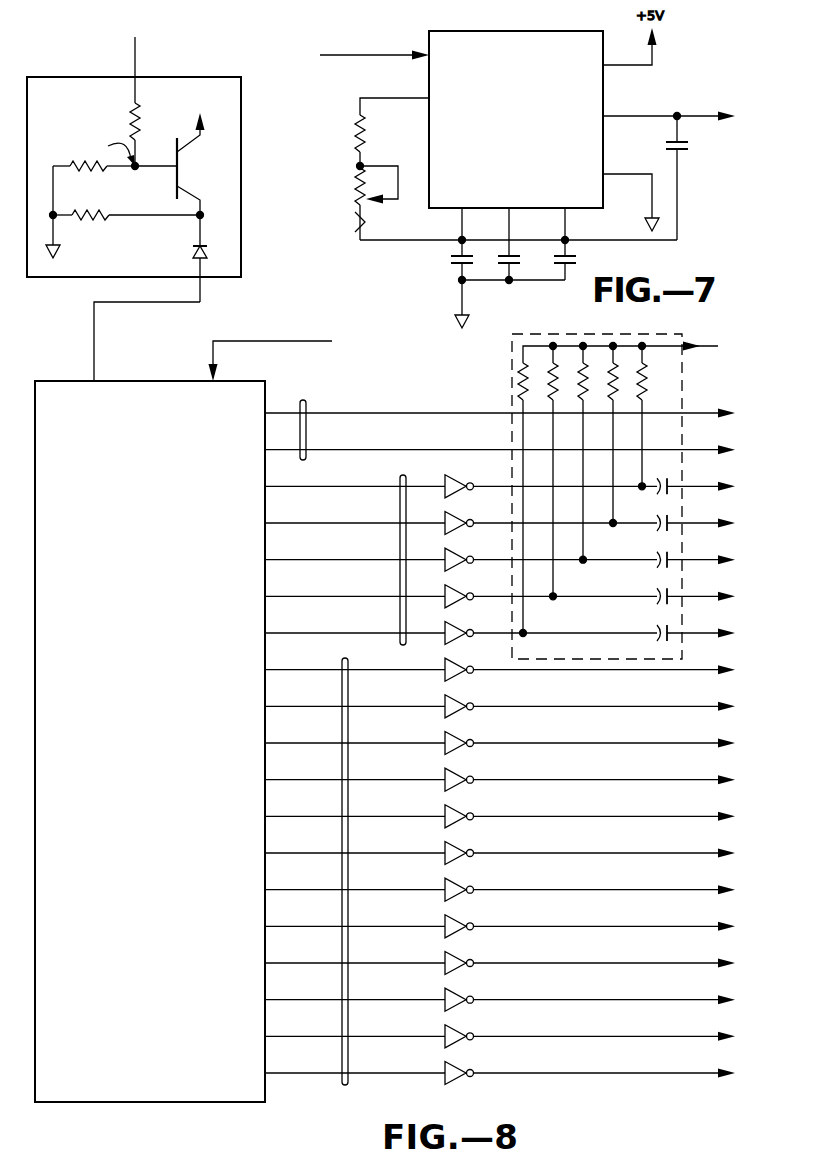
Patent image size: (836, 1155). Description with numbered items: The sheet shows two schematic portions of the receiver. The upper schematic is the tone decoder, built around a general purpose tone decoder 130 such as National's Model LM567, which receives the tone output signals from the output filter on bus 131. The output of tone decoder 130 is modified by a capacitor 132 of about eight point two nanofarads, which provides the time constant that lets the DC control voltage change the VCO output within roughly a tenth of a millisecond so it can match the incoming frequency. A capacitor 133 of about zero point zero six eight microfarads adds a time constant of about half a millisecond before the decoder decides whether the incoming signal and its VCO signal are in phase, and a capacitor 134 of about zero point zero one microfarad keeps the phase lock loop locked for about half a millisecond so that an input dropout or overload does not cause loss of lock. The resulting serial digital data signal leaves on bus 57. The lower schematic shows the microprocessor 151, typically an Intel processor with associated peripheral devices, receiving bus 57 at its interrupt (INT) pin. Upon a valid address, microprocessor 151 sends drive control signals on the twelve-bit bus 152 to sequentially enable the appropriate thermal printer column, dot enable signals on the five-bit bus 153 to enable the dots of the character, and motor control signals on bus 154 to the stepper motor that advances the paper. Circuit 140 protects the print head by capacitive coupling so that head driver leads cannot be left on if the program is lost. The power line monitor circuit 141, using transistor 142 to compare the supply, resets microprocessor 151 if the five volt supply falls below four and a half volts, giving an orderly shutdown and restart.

In FIG. 7, the bus 57 is at (360, 22).
In FIG. 8, the bus 57 is at (270, 341).
In FIG. 7, the general purpose tone decoder 130 is at (562, 31).
In FIG. 7, the bus 131 is at (367, 58).
In FIG. 7, the capacitor 132 is at (494, 250).
In FIG. 7, the capacitor 133 is at (542, 250).
In FIG. 7, the capacitor 134 is at (683, 153).
In FIG. 8, the circuit 140 is at (509, 371).
In FIG. 7, the power line monitor circuit 141 is at (134, 169).
In FIG. 7, the transistor 142 is at (181, 166).
In FIG. 8, the microprocessor 151 is at (181, 386).
In FIG. 8, the 12-bit bus 152 is at (345, 1086).
In FIG. 8, the 5-bit bus 153 is at (403, 478).
In FIG. 8, the bus 154 is at (303, 403).